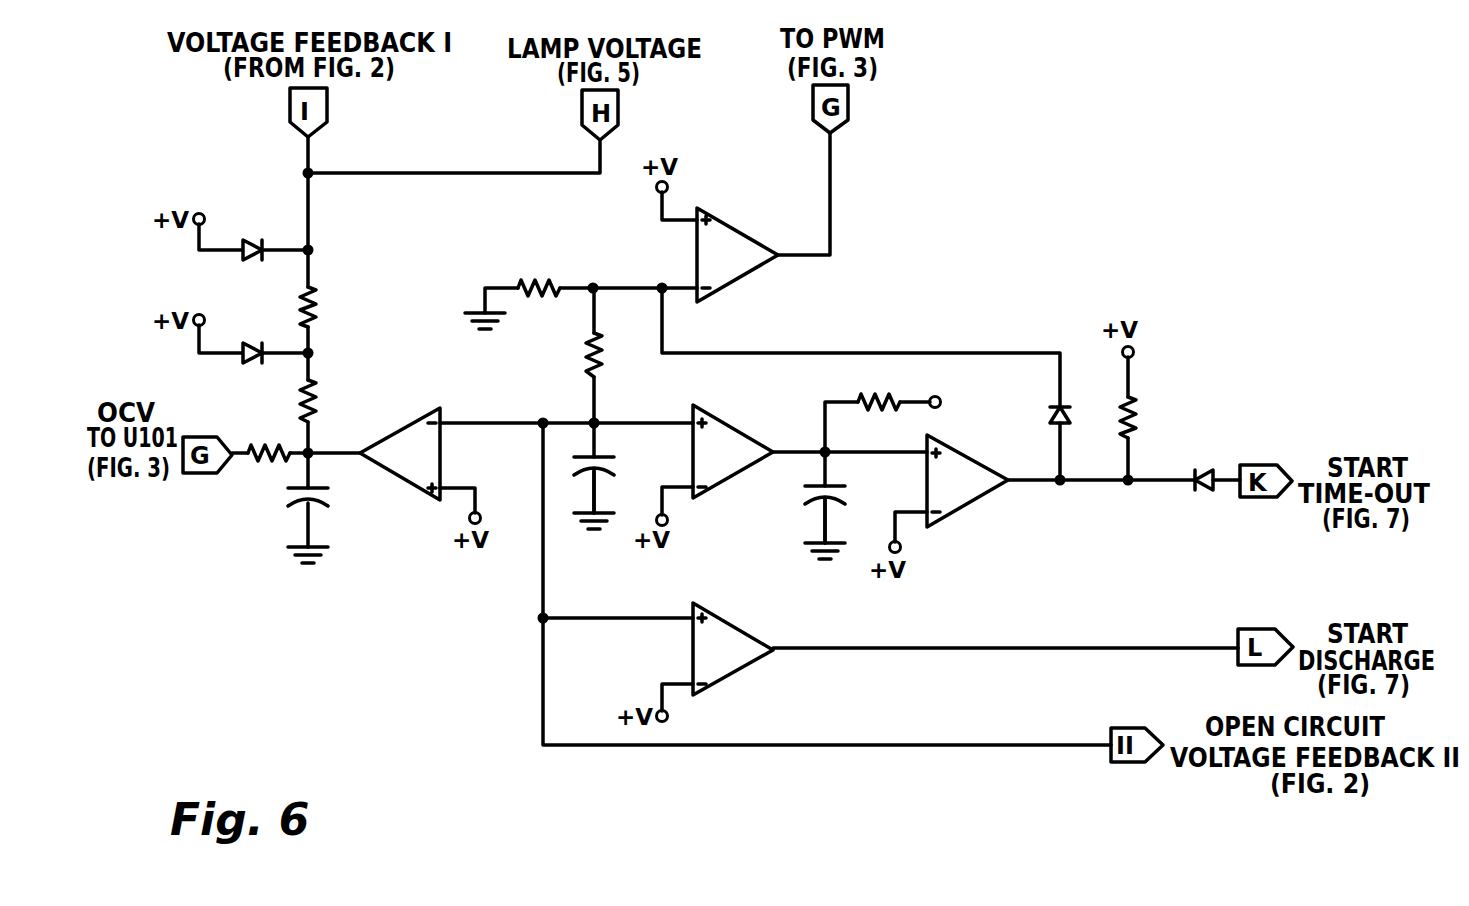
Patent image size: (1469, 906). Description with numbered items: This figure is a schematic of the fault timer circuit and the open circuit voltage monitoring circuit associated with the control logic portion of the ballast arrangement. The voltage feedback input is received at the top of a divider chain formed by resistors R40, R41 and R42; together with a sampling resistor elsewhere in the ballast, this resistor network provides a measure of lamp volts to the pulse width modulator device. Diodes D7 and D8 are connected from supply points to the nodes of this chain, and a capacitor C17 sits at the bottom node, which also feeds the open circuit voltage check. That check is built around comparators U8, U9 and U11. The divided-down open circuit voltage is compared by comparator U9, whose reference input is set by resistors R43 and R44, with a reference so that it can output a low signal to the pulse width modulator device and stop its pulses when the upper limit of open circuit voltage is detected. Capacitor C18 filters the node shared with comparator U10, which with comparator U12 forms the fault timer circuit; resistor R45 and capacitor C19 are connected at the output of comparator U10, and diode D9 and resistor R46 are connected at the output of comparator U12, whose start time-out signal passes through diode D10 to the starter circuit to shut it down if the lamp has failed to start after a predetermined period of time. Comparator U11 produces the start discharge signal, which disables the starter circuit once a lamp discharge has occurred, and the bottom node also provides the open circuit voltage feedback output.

The diode D7 is at (258, 241).
The diode D8 is at (258, 343).
The diode D9 is at (1052, 415).
The diode D10 is at (1205, 492).
The resistor R40 is at (317, 298).
The resistor R41 is at (316, 404).
The resistor R42 is at (257, 447).
The resistor R43 is at (541, 283).
The resistor R44 is at (588, 353).
The resistor R45 is at (912, 386).
The resistor R46 is at (1137, 416).
The capacitor C17 is at (290, 497).
The capacitor C18 is at (614, 468).
The capacitor C19 is at (845, 497).
The comparator U8 is at (400, 454).
The comparator U9 is at (737, 255).
The comparator U10 is at (733, 451).
The comparator U11 is at (733, 649).
The comparator U12 is at (967, 481).